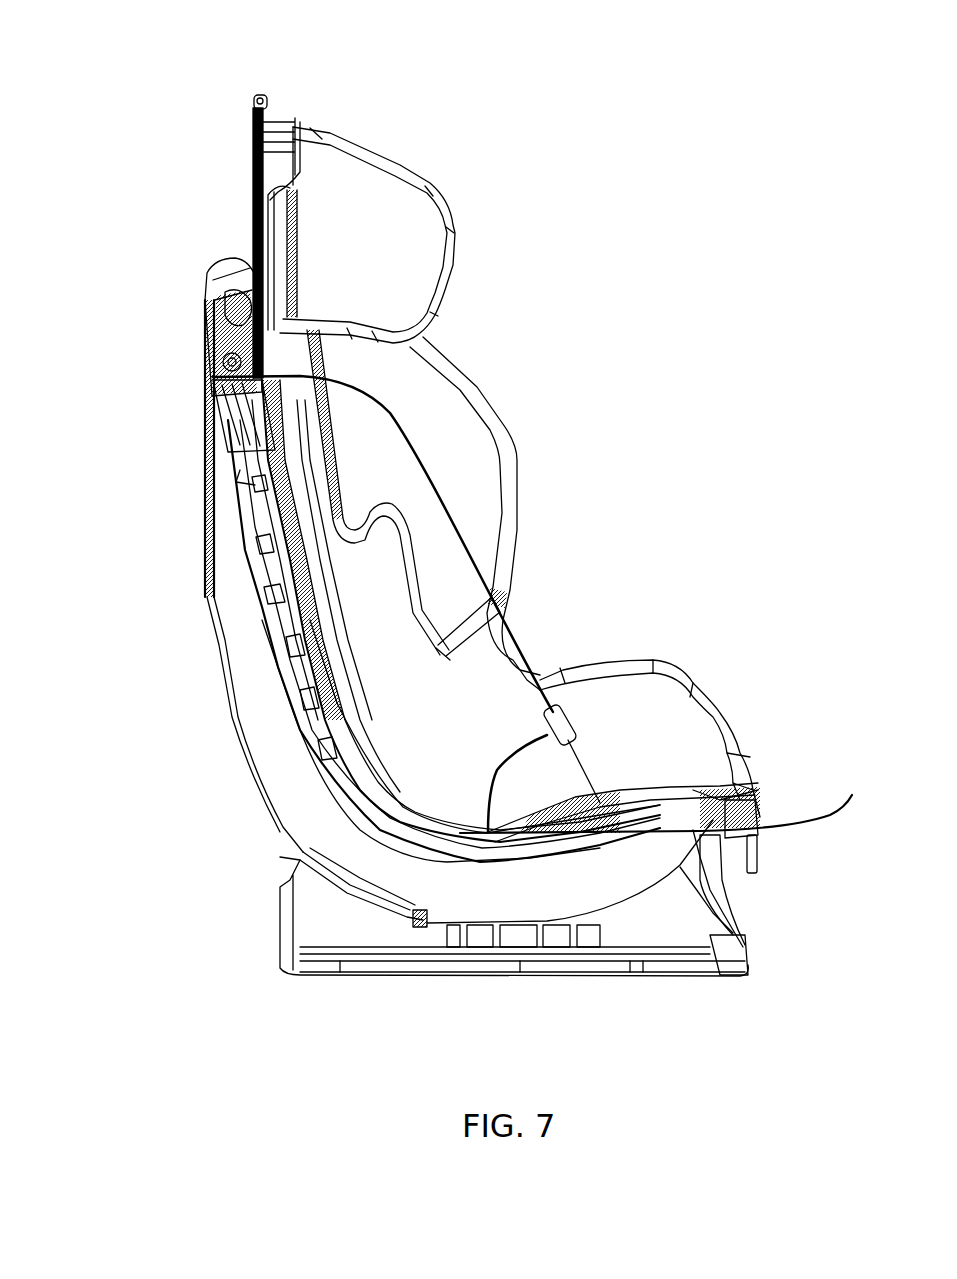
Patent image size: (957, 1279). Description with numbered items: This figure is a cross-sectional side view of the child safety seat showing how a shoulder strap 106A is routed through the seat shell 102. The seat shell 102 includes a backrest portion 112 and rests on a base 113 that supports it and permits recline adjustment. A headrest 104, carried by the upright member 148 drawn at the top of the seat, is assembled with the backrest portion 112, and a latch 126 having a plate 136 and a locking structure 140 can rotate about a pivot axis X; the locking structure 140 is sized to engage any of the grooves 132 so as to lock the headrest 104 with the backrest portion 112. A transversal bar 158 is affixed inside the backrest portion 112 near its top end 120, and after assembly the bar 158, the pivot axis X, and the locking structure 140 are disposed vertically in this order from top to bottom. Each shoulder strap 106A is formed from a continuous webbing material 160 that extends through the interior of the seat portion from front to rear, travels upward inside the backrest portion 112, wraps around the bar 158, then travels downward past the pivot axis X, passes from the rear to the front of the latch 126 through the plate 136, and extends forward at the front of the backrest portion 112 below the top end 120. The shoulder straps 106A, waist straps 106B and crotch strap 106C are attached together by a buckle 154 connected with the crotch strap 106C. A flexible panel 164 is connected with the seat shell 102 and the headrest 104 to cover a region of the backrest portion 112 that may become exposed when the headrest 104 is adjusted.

The headrest post 148 is at (258, 96).
The panel 164 is at (238, 227).
The headrest 104 is at (398, 166).
The top end 120 is at (208, 273).
The transversal bar 158 is at (208, 300).
The pivot axis X is at (213, 355).
The latch 126 is at (203, 391).
The plate 136 is at (215, 435).
The locking structure 140 is at (223, 467).
The webbing material 160 is at (243, 520).
The grooves 132 is at (256, 540).
The backrest portion 112 is at (205, 645).
The seat shell 102 is at (262, 786).
The shoulder straps 106A is at (410, 448).
The waist straps 106B is at (545, 703).
The crotch strap 106C is at (527, 690).
The buckle 154 is at (587, 672).
The base 113 is at (742, 933).